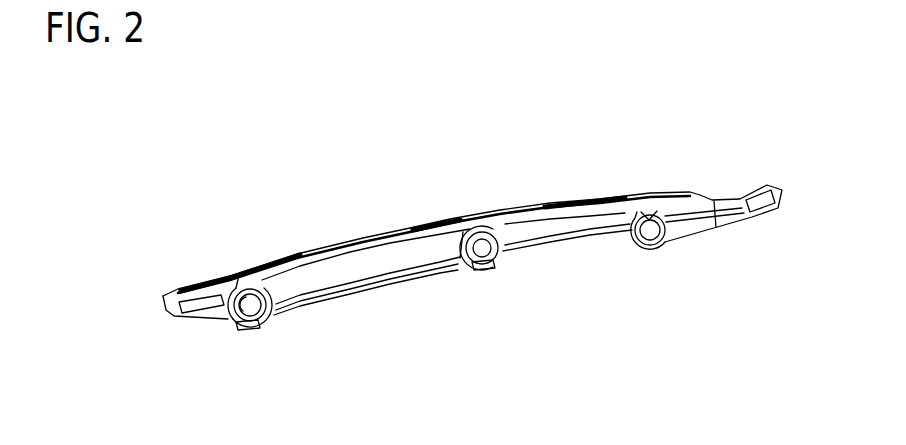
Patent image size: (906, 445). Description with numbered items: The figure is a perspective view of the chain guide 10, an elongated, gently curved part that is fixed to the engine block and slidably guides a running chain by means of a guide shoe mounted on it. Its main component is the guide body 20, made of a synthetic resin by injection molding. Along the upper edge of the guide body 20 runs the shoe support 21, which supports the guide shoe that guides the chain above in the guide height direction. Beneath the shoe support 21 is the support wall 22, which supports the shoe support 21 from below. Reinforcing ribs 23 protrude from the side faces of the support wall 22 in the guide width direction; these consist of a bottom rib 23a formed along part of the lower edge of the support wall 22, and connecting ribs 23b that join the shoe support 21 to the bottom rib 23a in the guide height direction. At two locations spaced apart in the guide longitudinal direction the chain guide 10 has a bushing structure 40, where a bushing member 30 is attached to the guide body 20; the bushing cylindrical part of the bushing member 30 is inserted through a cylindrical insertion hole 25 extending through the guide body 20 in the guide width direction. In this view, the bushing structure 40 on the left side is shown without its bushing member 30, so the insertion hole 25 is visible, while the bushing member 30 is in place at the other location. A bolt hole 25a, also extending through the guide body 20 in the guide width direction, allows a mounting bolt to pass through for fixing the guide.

The chain guide 10 is at (224, 139).
The guide body 20 is at (299, 262).
The shoe support 21 is at (404, 228).
The support wall 22 is at (337, 268).
The reinforcing ribs 23 is at (681, 301).
The bottom rib 23a is at (386, 272).
The connecting rib 23b is at (227, 307).
The cylindrical insertion hole 25 is at (247, 297).
The bolt hole 25a is at (645, 225).
The bushing member 30 is at (479, 238).
The bushing structure 40 is at (258, 323).